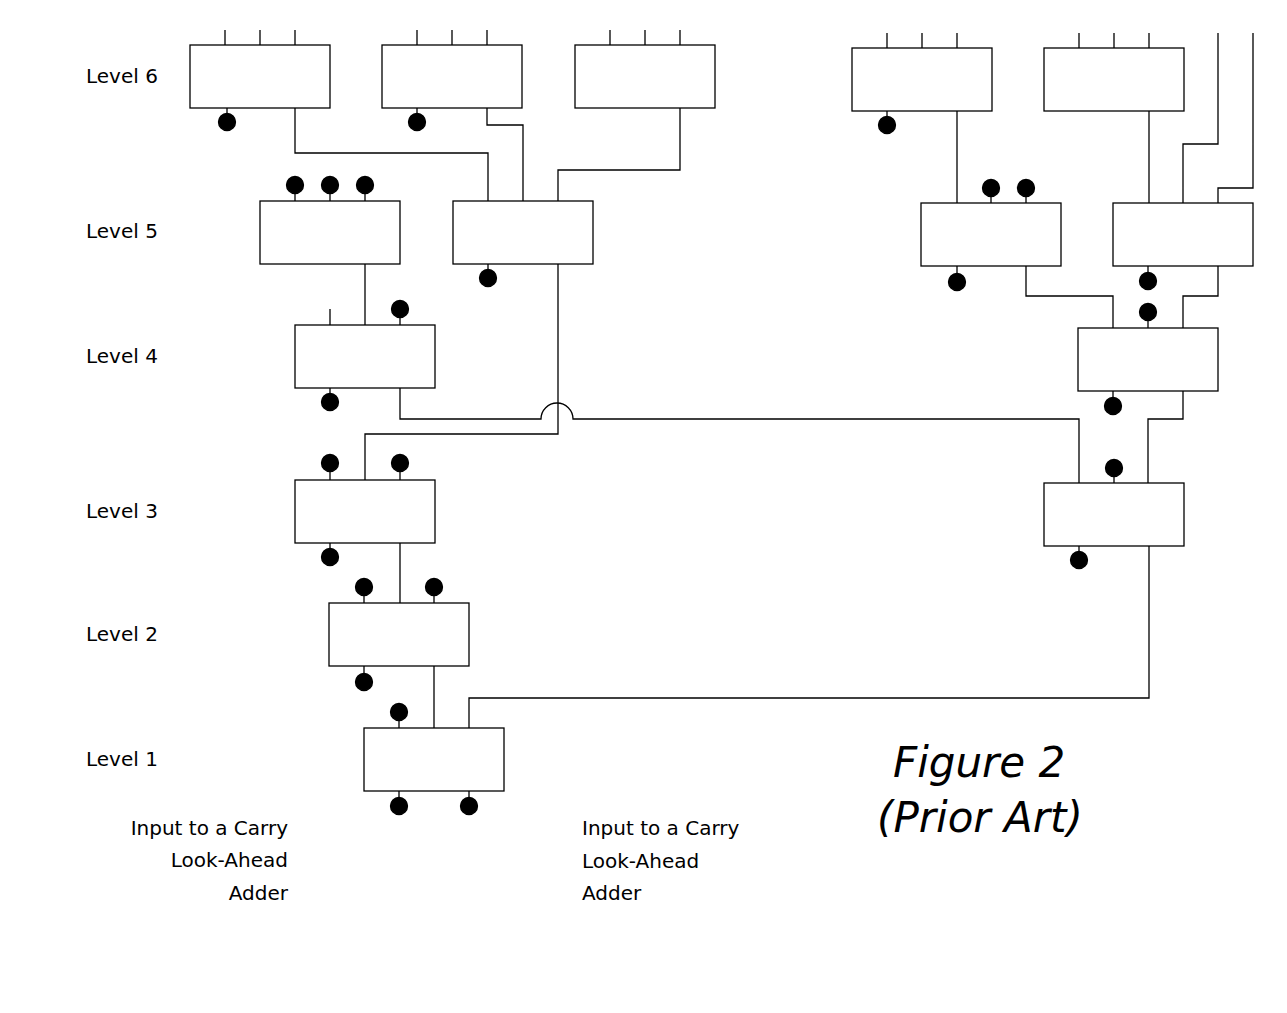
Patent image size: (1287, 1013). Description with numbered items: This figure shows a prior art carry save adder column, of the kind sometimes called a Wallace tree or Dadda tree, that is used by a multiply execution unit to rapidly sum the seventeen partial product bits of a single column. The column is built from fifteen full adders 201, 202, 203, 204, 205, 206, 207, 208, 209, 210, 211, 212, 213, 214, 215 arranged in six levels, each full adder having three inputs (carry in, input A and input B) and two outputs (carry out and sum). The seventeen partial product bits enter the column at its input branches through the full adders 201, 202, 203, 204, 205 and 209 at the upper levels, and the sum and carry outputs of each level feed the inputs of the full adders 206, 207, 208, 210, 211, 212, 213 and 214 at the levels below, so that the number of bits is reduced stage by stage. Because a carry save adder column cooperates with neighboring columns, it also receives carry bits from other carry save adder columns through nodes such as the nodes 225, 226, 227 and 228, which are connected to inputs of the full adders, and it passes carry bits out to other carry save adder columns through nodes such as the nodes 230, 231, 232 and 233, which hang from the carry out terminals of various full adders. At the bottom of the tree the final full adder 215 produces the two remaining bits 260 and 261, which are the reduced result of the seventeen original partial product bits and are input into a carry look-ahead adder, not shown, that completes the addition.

The full adder 201 is at (206, 46).
The full adder 202 is at (398, 46).
The full adder 203 is at (591, 46).
The full adder 204 is at (868, 49).
The full adder 205 is at (1060, 49).
The full adder 206 is at (276, 202).
The full adder 207 is at (469, 202).
The full adder 208 is at (937, 204).
The full adder 209 is at (1130, 204).
The full adder 210 is at (312, 326).
The full adder 211 is at (1095, 329).
The full adder 212 is at (302, 481).
The full adder 213 is at (1062, 484).
The full adder 214 is at (345, 604).
The full adder 215 is at (380, 729).
The node 225 is at (290, 183).
The node 226 is at (325, 462).
The node 227 is at (408, 309).
The node 228 is at (408, 463).
The node 230 is at (218, 123).
The node 231 is at (410, 122).
The node 232 is at (880, 125).
The node 233 is at (950, 282).
The bit 260 is at (477, 810).
The bit 261 is at (392, 810).